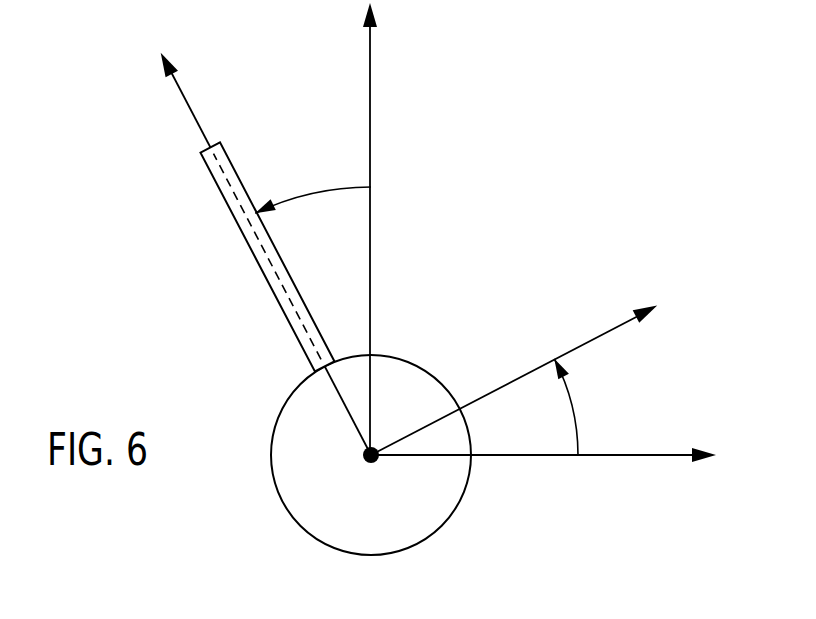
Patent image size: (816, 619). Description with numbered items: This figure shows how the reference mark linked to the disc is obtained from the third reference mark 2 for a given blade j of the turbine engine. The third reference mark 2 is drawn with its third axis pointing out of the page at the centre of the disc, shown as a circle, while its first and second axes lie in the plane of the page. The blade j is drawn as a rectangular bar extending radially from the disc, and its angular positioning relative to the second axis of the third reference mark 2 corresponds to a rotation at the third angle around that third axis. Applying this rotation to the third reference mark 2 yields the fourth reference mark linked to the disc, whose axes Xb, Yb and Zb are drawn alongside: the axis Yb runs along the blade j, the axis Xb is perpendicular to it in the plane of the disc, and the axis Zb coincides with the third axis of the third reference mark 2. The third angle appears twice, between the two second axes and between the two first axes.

The third reference mark (x2, y2, z2) 2 is at (542, 245).
The second axis of the fourth reference mark Yb is at (250, 254).
The first axis of the fourth reference mark Xb is at (530, 380).
The third axis of the fourth reference mark Zb is at (371, 455).
The blade j is at (265, 256).